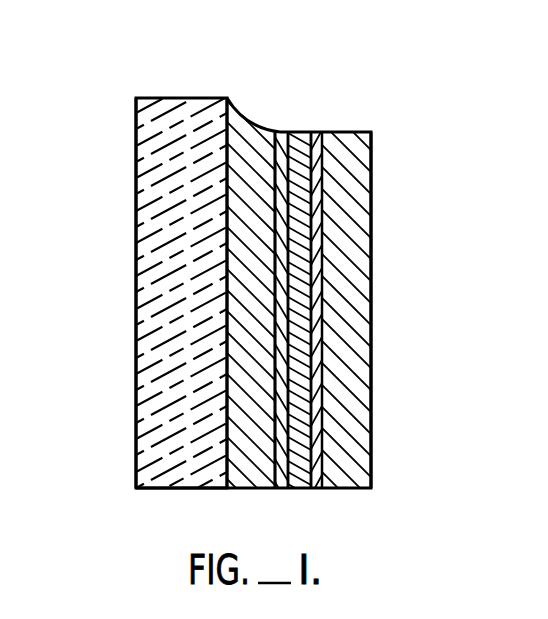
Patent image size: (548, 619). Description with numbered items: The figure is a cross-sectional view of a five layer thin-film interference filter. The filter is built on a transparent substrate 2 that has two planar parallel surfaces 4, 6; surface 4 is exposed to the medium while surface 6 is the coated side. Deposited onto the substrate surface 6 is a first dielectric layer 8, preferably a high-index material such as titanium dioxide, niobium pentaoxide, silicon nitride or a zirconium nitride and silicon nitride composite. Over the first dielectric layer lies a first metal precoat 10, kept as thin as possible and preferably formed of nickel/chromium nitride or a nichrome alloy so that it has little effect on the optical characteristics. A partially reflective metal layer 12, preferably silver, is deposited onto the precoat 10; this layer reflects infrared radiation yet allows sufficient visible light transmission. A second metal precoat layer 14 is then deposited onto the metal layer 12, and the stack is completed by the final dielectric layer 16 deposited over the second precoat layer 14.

The transparent substrate 2 is at (163, 97).
The surface 4 is at (136, 161).
The surface 6 is at (228, 98).
The first dielectric layer 8 is at (265, 128).
The first metal precoat 10 is at (283, 130).
The partially reflective metal layer 12 is at (300, 130).
The second metal precoat layer 14 is at (320, 130).
The final dielectric layer 16 is at (352, 130).